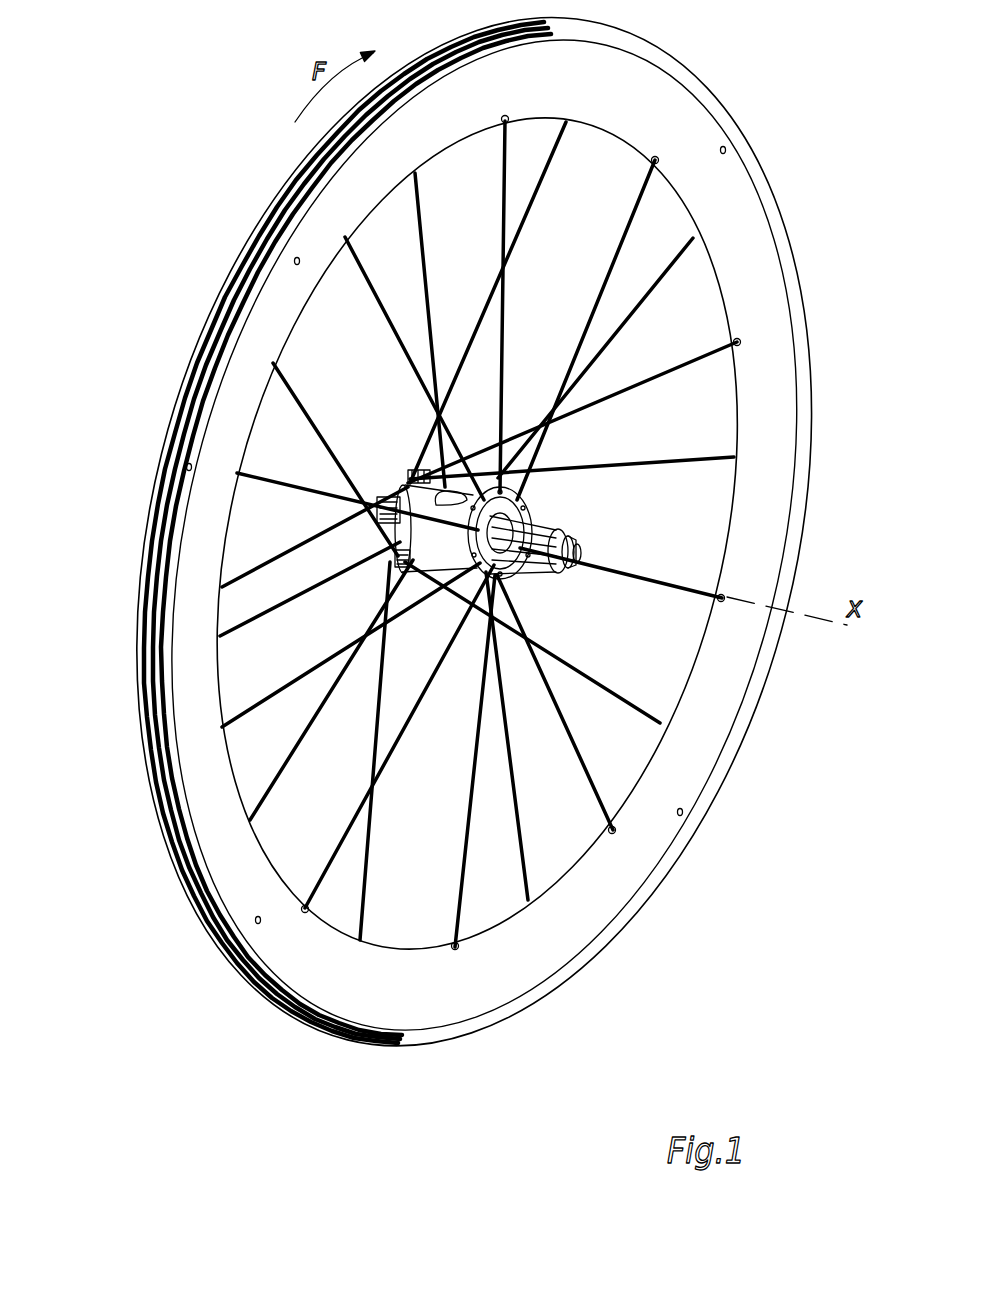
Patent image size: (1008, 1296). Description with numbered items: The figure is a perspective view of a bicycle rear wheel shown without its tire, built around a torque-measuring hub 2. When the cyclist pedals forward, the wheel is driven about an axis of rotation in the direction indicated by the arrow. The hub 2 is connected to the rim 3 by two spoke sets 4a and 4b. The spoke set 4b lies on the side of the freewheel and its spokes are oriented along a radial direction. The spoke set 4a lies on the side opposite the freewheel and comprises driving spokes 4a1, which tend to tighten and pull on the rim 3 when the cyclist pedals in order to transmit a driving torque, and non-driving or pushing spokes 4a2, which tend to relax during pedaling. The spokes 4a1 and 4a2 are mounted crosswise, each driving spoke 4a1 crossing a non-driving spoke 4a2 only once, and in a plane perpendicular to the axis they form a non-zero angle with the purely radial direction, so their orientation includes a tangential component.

The torque-measuring hub 2 is at (398, 476).
The rim 3 is at (266, 222).
The spoke set on the side opposite the freewheel 4a is at (627, 697).
The driving spoke 4a1 is at (240, 575).
The non-driving spoke 4a2 is at (427, 440).
The spoke set on the side of the freewheel 4b is at (683, 390).